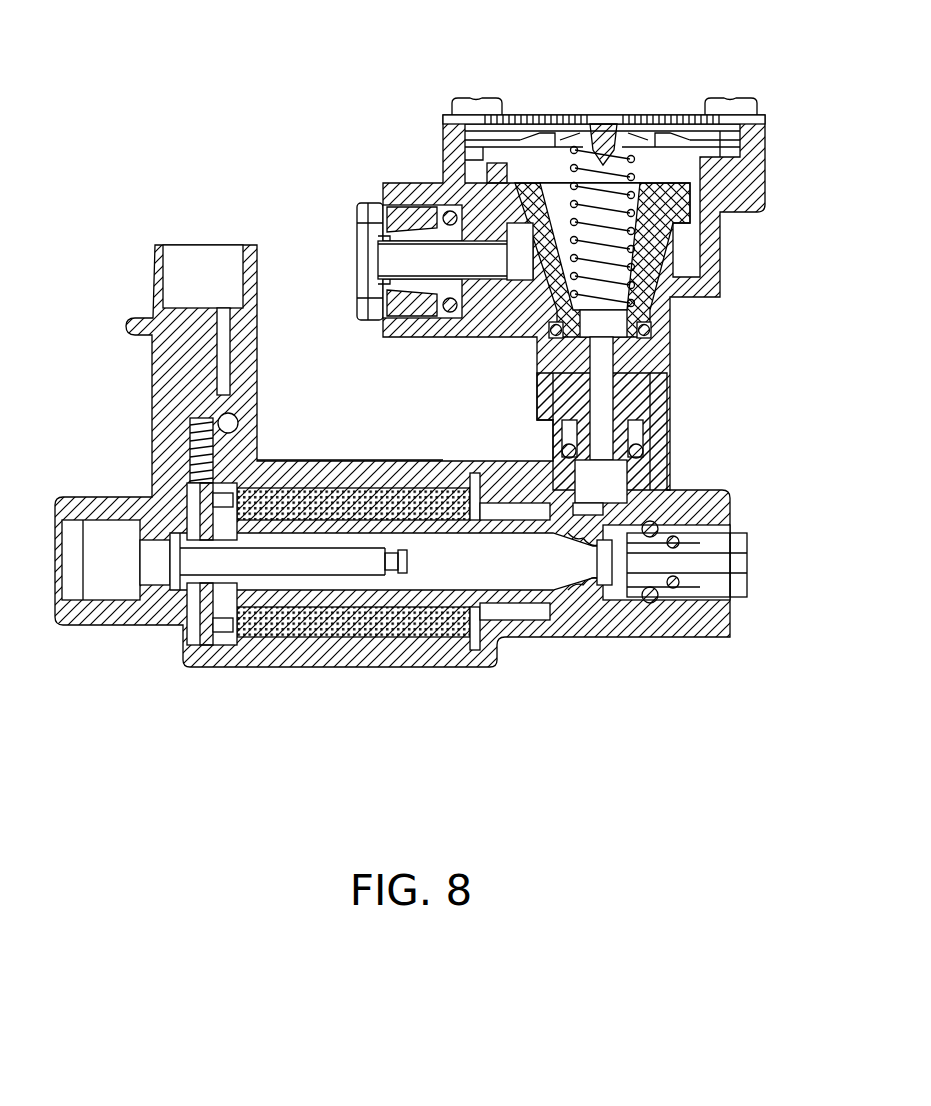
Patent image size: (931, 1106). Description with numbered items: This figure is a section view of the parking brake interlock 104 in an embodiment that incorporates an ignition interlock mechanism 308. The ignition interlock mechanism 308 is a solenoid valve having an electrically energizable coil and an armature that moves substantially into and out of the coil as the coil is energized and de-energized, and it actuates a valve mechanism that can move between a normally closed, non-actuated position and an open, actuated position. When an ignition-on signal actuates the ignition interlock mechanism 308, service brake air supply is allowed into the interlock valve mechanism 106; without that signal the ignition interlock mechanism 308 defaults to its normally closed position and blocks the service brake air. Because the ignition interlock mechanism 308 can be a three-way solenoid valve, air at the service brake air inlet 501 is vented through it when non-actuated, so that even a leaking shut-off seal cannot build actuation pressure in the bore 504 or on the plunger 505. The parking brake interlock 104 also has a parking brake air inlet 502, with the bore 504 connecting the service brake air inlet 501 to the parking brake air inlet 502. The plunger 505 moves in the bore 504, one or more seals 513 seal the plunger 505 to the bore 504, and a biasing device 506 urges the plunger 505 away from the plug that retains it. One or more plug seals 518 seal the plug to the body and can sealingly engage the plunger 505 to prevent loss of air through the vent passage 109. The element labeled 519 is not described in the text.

The parking brake interlock 104 is at (445, 471).
The interlock valve mechanism 106 is at (569, 268).
The vent passage 109 is at (545, 143).
The ignition interlock mechanism 308 is at (438, 505).
The service brake air inlet 501 is at (696, 562).
The parking brake air inlet 502 is at (362, 262).
The bore 504 is at (520, 270).
The plunger 505 is at (673, 225).
The biasing device 506 is at (647, 255).
The seals 513 is at (640, 330).
The plug seals 518 is at (758, 150).
The top cover plate 519 is at (765, 122).